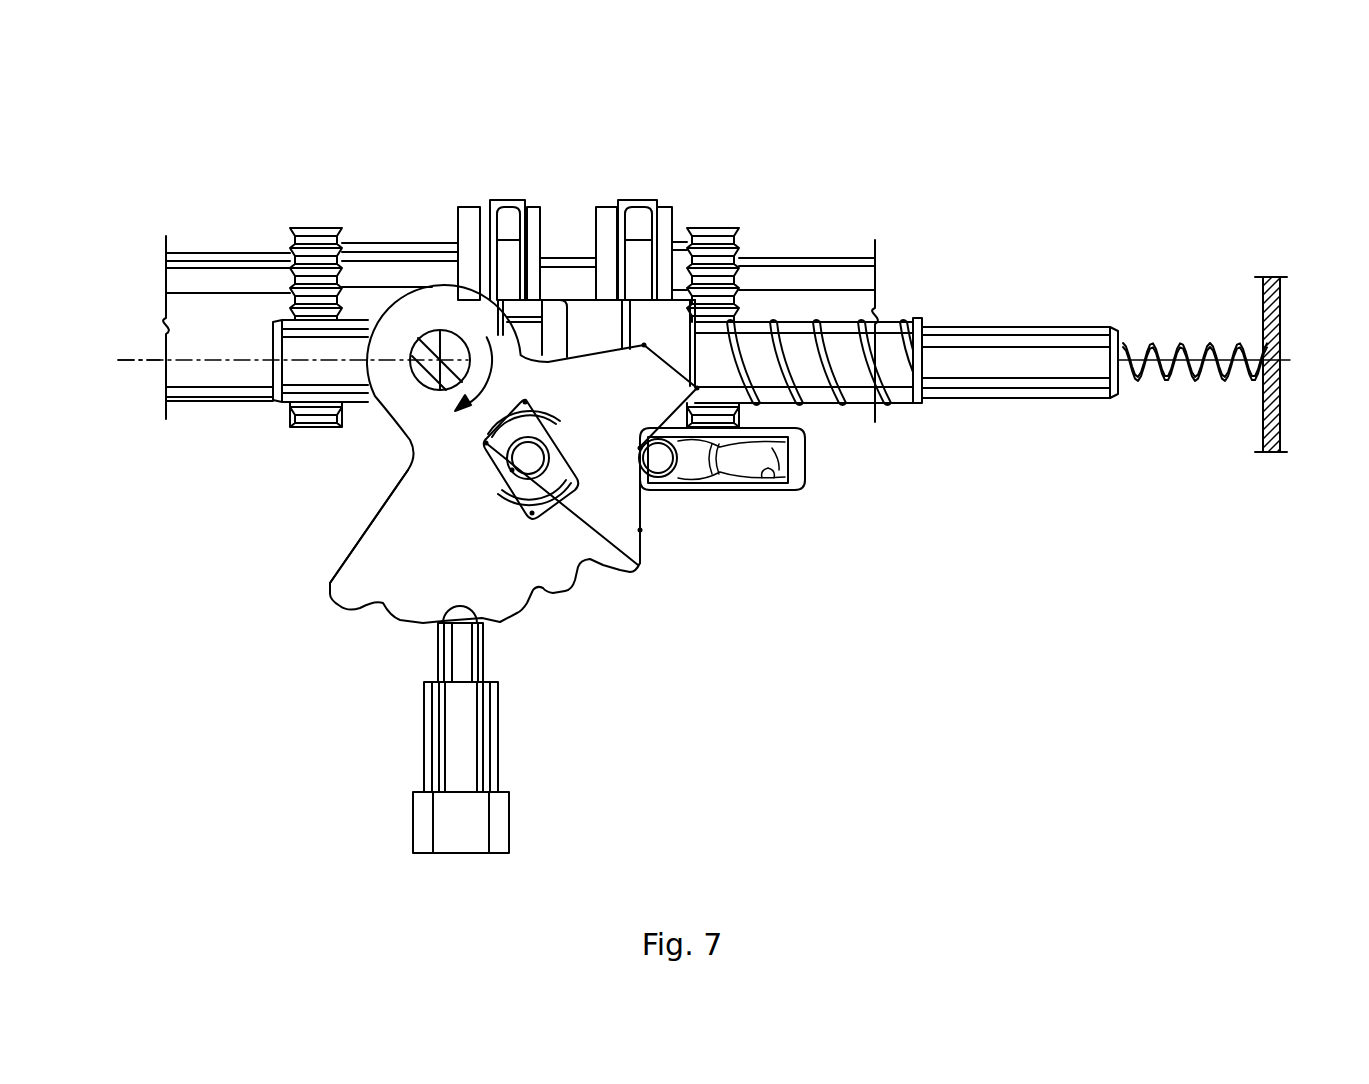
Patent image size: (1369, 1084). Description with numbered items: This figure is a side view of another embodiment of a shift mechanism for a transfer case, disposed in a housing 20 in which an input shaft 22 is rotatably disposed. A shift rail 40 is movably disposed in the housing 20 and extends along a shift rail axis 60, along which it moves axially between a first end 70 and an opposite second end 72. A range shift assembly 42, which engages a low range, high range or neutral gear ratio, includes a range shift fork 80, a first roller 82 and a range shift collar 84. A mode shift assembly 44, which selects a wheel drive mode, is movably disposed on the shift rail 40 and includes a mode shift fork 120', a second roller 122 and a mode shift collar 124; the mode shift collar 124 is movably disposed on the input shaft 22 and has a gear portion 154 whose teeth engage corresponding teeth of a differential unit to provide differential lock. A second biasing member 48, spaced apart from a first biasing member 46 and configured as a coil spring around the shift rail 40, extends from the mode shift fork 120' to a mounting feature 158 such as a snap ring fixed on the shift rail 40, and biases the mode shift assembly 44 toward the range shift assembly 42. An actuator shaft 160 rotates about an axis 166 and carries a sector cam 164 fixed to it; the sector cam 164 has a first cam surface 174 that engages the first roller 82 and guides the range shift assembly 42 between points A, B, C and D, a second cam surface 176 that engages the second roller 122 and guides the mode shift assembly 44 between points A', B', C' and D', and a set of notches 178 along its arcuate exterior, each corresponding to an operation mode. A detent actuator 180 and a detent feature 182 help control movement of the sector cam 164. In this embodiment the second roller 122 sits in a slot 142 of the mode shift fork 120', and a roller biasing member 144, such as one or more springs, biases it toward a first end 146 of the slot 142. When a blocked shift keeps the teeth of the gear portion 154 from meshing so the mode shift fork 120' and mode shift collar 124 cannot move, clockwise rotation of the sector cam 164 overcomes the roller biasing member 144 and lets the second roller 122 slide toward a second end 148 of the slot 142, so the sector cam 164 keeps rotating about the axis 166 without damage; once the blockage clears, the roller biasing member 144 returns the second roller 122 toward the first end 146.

The housing 20 is at (1281, 376).
The input shaft 22 is at (228, 252).
The shift rail 40 is at (1090, 400).
The range shift assembly 42 is at (364, 140).
The mode shift assembly 44 is at (667, 126).
The first biasing member 46 is at (1193, 343).
The second biasing member 48 is at (903, 317).
The shift rail axis 60 is at (150, 361).
The first end 70 is at (1118, 386).
The second end 72 is at (289, 414).
The range shift fork 80 is at (500, 200).
The first roller 82 is at (630, 572).
The range shift collar 84 is at (427, 243).
The mode shift fork 120' is at (645, 259).
The second roller 122 is at (672, 487).
The mode shift collar 124 is at (663, 207).
The slot 142 is at (786, 483).
The roller biasing member 144 is at (790, 470).
The first end 146 is at (636, 482).
The second end 148 is at (797, 433).
The gear portion 154 is at (718, 226).
The mounting feature 158 is at (922, 407).
The actuator shaft 160 is at (410, 368).
The sector cam 164 is at (404, 452).
The axis 166 is at (415, 375).
The first cam surface 174 is at (517, 507).
The second cam surface 176 is at (643, 513).
The set of notches 178 is at (484, 624).
The detent actuator 180 is at (424, 745).
The detent feature 182 is at (439, 651).